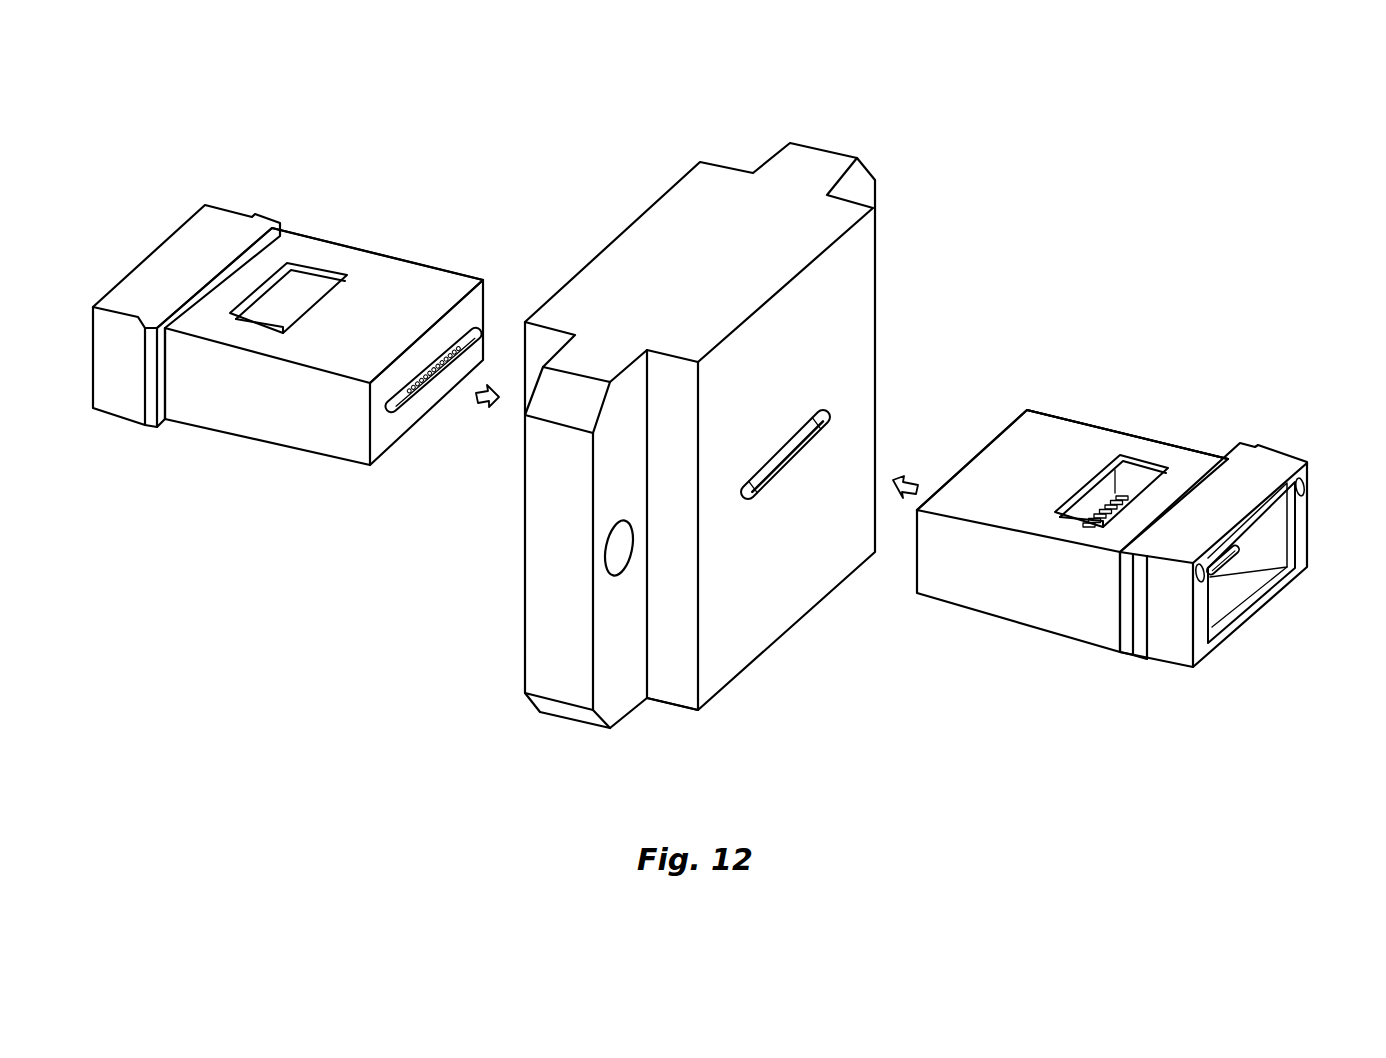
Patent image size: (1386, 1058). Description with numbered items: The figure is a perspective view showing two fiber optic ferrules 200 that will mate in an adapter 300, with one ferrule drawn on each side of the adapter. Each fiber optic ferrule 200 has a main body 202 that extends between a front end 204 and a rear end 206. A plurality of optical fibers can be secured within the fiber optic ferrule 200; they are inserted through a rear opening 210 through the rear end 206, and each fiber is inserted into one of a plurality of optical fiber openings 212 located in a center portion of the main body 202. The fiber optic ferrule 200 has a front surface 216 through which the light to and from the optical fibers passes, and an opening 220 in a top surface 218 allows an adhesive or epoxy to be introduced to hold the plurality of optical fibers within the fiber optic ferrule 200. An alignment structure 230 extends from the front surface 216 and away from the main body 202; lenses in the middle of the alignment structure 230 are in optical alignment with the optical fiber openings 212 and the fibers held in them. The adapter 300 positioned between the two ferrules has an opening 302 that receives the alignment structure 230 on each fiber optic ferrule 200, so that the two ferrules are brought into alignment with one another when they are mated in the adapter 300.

The fiber optic ferrule 200 is at (736, 397).
The main body 202 is at (388, 438).
The front end 204 is at (1027, 410).
The rear end 206 is at (1308, 527).
The rear opening 210 is at (1247, 580).
The optical fiber openings 212 is at (1115, 493).
The front surface 216 is at (478, 305).
The top surface 218 is at (391, 325).
The opening 220 is at (305, 263).
The alignment structure 230 is at (447, 382).
The adapter 300 is at (741, 398).
The opening 302 is at (834, 417).